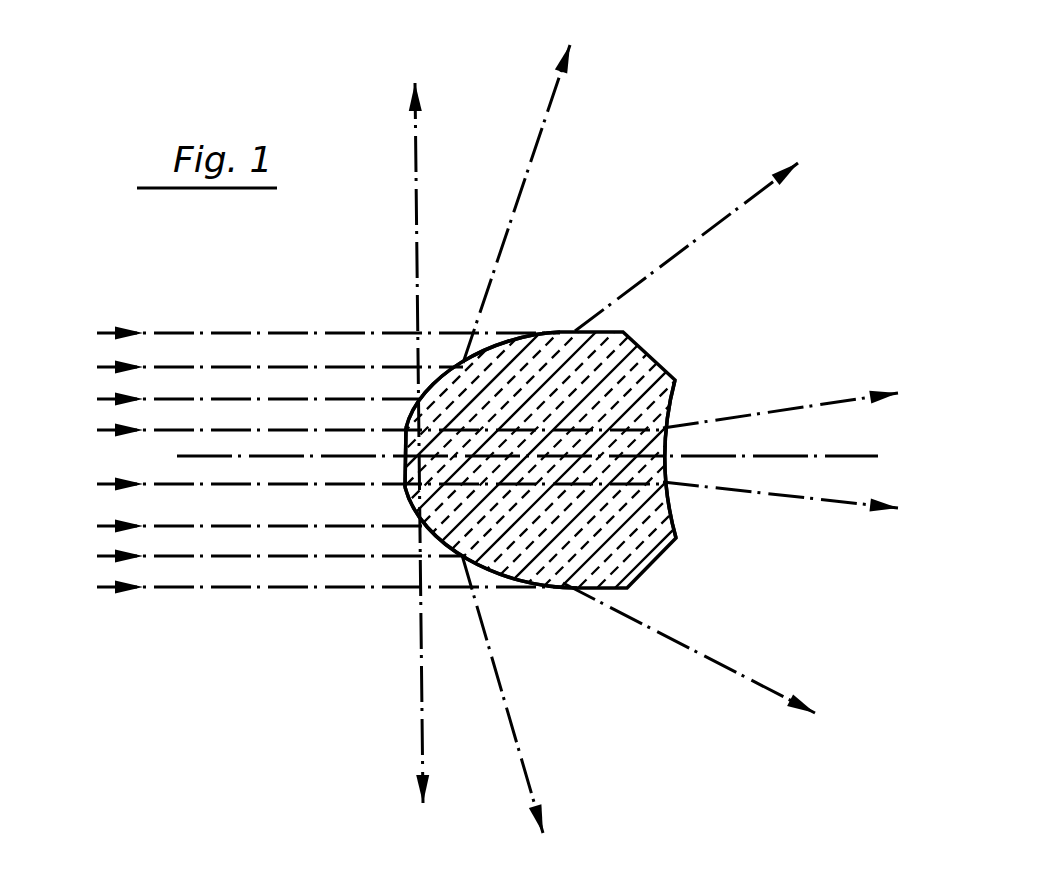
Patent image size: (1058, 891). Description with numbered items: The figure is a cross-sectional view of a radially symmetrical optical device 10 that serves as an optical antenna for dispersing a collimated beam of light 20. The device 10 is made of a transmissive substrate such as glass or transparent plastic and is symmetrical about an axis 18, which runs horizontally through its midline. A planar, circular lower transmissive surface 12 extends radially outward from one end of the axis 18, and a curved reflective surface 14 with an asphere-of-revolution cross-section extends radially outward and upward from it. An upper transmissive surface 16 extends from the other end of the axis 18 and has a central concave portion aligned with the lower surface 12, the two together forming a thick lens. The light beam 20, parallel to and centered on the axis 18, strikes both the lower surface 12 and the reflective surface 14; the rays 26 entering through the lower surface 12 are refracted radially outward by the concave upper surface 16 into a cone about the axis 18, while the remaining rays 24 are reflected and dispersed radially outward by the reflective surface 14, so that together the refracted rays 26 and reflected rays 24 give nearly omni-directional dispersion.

The device 10 is at (666, 347).
The lower transmissive surface 12 is at (403, 443).
The curved reflective surface 14 is at (494, 348).
The upper transmissive surface 16 is at (668, 418).
The axis 18 is at (780, 458).
The beam of light 20 is at (361, 459).
The reflected rays 24 is at (621, 444).
The refracted rays 26 is at (795, 451).